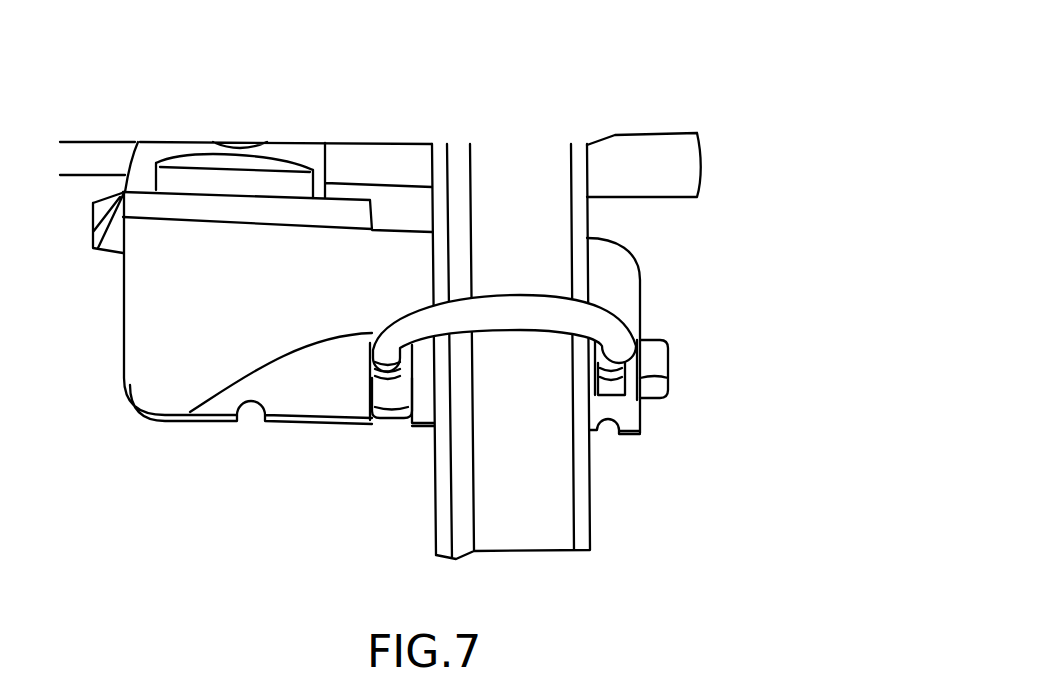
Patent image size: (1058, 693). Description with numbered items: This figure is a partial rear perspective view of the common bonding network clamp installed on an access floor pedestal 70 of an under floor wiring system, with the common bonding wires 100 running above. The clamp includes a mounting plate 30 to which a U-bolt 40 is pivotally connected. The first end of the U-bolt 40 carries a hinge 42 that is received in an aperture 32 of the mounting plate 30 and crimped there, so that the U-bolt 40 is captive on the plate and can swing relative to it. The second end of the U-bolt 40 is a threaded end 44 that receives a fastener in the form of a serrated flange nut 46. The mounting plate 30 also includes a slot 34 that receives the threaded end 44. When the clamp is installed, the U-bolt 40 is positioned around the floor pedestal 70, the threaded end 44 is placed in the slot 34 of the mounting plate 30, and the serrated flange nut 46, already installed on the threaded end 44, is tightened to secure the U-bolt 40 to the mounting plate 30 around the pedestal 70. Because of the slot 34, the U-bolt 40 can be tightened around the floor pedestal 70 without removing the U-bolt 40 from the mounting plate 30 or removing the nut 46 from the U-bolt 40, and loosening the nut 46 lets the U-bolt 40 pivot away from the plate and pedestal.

The common bonding wires 100 is at (670, 153).
The access floor pedestal 70 is at (507, 182).
The slot 34 is at (190, 412).
The mounting plate 30 is at (630, 272).
The aperture 32 is at (608, 397).
The U-bolt 40 is at (617, 325).
The hinge 42 is at (667, 367).
The threaded end 44 is at (387, 376).
The serrated flange nut 46 is at (393, 405).